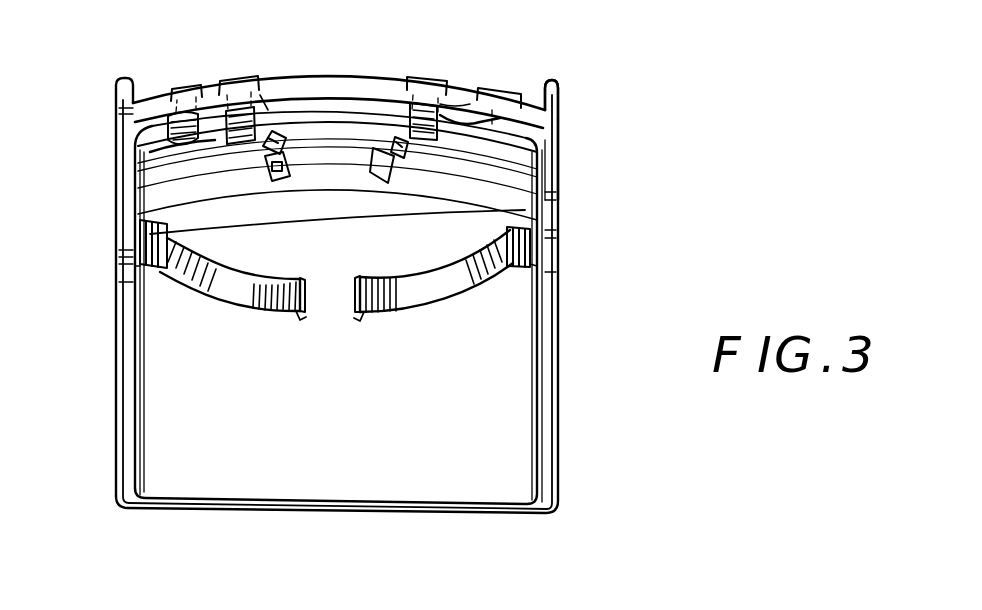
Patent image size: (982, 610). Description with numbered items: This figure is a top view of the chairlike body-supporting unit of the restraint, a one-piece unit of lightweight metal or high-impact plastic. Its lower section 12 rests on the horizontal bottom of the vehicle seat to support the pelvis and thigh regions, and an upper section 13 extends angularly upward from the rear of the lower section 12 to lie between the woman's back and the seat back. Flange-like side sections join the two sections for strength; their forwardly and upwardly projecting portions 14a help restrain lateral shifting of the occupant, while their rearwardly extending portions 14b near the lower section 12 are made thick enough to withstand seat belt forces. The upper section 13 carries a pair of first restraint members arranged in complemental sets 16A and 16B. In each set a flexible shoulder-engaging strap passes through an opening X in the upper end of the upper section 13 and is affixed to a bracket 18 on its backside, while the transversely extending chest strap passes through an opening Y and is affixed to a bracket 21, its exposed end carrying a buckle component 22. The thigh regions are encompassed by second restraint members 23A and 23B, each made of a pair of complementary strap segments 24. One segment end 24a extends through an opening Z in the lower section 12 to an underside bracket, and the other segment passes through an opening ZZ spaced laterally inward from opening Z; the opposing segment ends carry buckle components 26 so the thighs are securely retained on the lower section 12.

The lower section 12 is at (172, 326).
The upper section 13 is at (372, 78).
The forwardly and upwardly projecting portions of the side sections 14a is at (552, 158).
The rearwardly extending portions of the side sections 14b is at (556, 88).
The first restraint member set 16A is at (176, 152).
The first restraint member set 16B is at (478, 160).
The bracket 18 is at (240, 78).
The bracket 21 is at (176, 92).
The buckle component 22 is at (380, 176).
The second restraint member 23A is at (256, 314).
The second restraint member 23B is at (415, 320).
The strap segment 24 is at (386, 268).
The strap segment end 24a is at (180, 232).
The buckle component 26 is at (146, 230).
The opening X is at (270, 90).
The opening Y is at (468, 86).
The opening Z is at (148, 266).
The opening ZZ is at (360, 321).